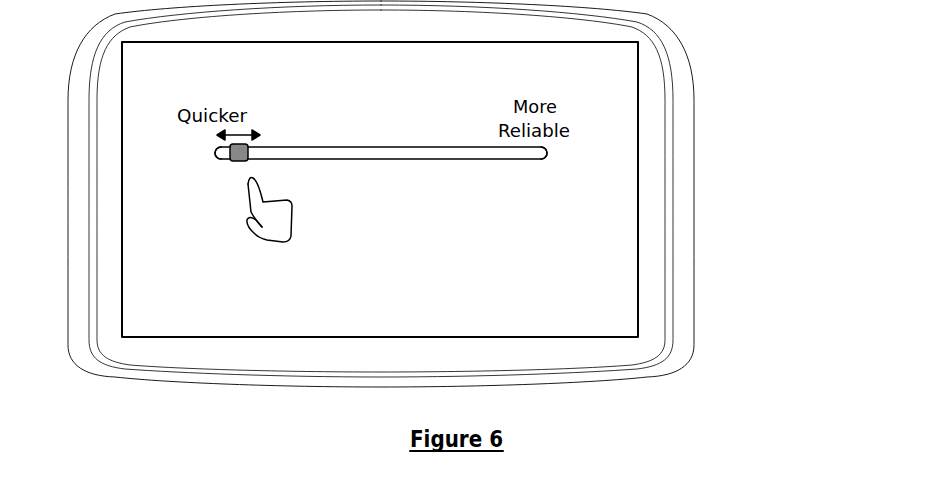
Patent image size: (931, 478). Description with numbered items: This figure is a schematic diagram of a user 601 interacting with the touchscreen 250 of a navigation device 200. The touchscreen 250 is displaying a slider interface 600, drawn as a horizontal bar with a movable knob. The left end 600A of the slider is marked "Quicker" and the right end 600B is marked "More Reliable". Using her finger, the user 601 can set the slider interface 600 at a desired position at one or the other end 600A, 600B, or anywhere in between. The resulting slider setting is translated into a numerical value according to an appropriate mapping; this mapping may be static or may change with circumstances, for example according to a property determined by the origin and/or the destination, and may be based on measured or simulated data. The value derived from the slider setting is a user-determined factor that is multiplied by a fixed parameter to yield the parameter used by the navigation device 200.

The navigation device 200 is at (688, 135).
The touchscreen 250 is at (155, 83).
The slider interface 600 is at (245, 153).
The left end 600A is at (215, 153).
The right end 600B is at (546, 153).
The user 601 is at (270, 228).